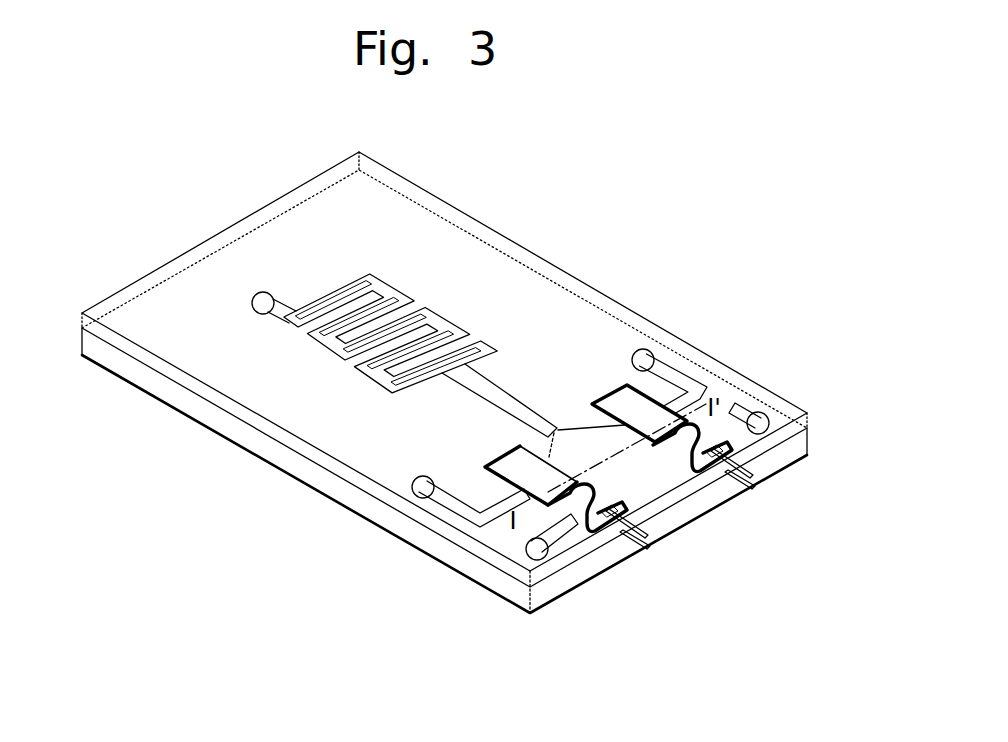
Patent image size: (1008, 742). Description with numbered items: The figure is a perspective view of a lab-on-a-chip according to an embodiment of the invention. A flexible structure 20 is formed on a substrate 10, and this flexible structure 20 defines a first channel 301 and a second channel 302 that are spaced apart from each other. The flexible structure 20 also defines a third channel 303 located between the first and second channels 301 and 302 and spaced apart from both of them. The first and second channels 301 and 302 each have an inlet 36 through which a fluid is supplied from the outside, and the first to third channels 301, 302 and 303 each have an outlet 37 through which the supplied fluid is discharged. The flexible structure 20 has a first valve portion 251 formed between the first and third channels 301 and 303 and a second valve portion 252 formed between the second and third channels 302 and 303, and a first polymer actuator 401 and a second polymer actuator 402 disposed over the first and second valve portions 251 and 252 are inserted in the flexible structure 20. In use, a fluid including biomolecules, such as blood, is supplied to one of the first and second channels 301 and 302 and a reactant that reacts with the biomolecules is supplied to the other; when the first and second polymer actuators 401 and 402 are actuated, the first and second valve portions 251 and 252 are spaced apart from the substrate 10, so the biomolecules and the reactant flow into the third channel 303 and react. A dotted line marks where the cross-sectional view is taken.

The substrate 10 is at (275, 457).
The flexible structure 20 is at (228, 401).
The inlet 36 is at (548, 548).
The outlet 37 is at (262, 299).
The first valve portion 251 is at (603, 484).
The second valve portion 252 is at (742, 463).
The first channel 301 is at (457, 504).
The second channel 302 is at (690, 380).
The third channel 303 is at (428, 312).
The first polymer actuator 401 is at (503, 464).
The second polymer actuator 402 is at (620, 396).